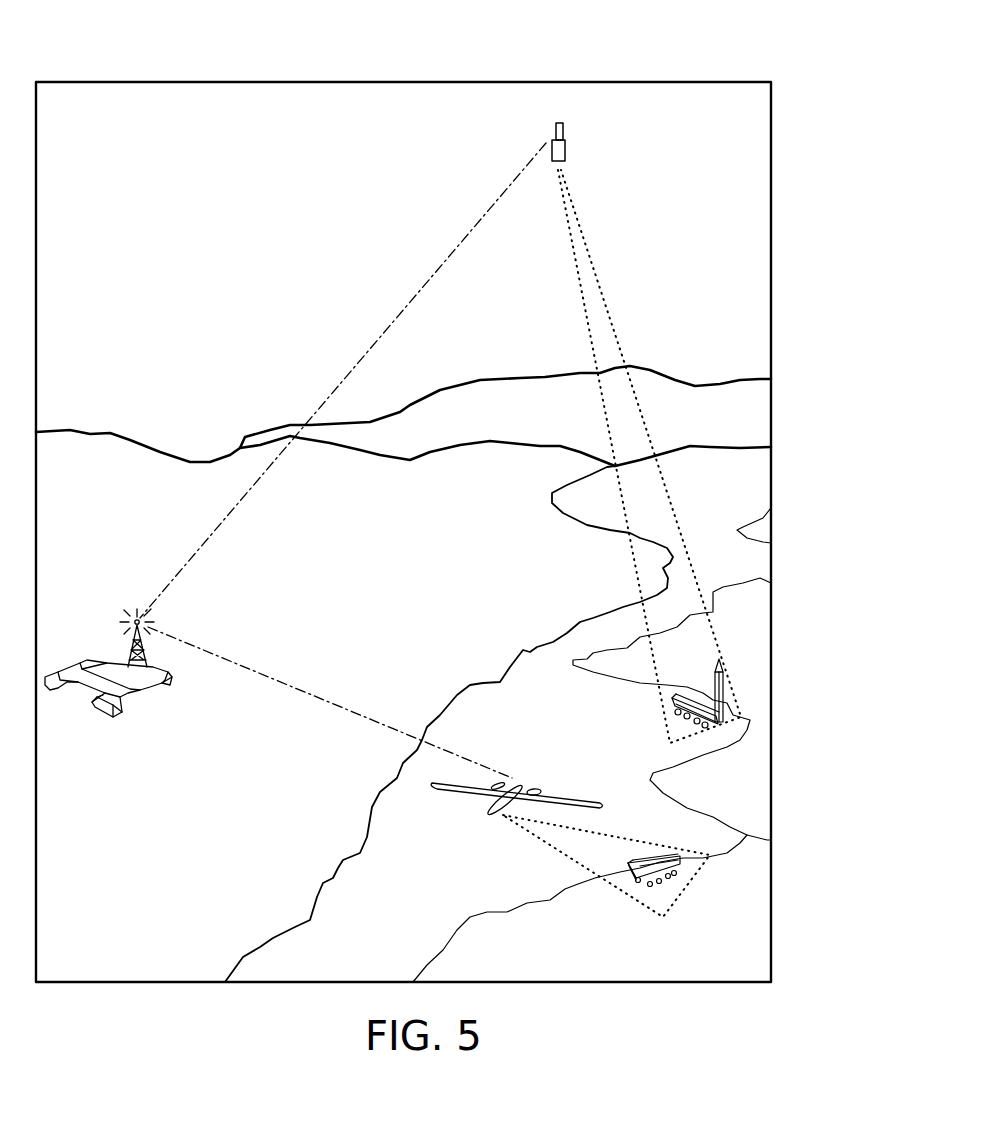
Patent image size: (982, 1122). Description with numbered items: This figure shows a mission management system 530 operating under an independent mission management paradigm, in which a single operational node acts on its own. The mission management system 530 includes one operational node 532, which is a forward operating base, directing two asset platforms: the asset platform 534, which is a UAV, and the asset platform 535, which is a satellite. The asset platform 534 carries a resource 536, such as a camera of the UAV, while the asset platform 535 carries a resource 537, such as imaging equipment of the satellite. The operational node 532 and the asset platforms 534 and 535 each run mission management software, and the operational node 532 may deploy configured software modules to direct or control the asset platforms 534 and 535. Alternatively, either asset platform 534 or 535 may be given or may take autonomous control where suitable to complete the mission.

The mission management system 530 is at (803, 88).
The operational node 532 is at (140, 692).
The asset platform 534 is at (514, 797).
The asset platform 535 is at (566, 150).
The resource 536 is at (487, 815).
The resource 537 is at (548, 155).